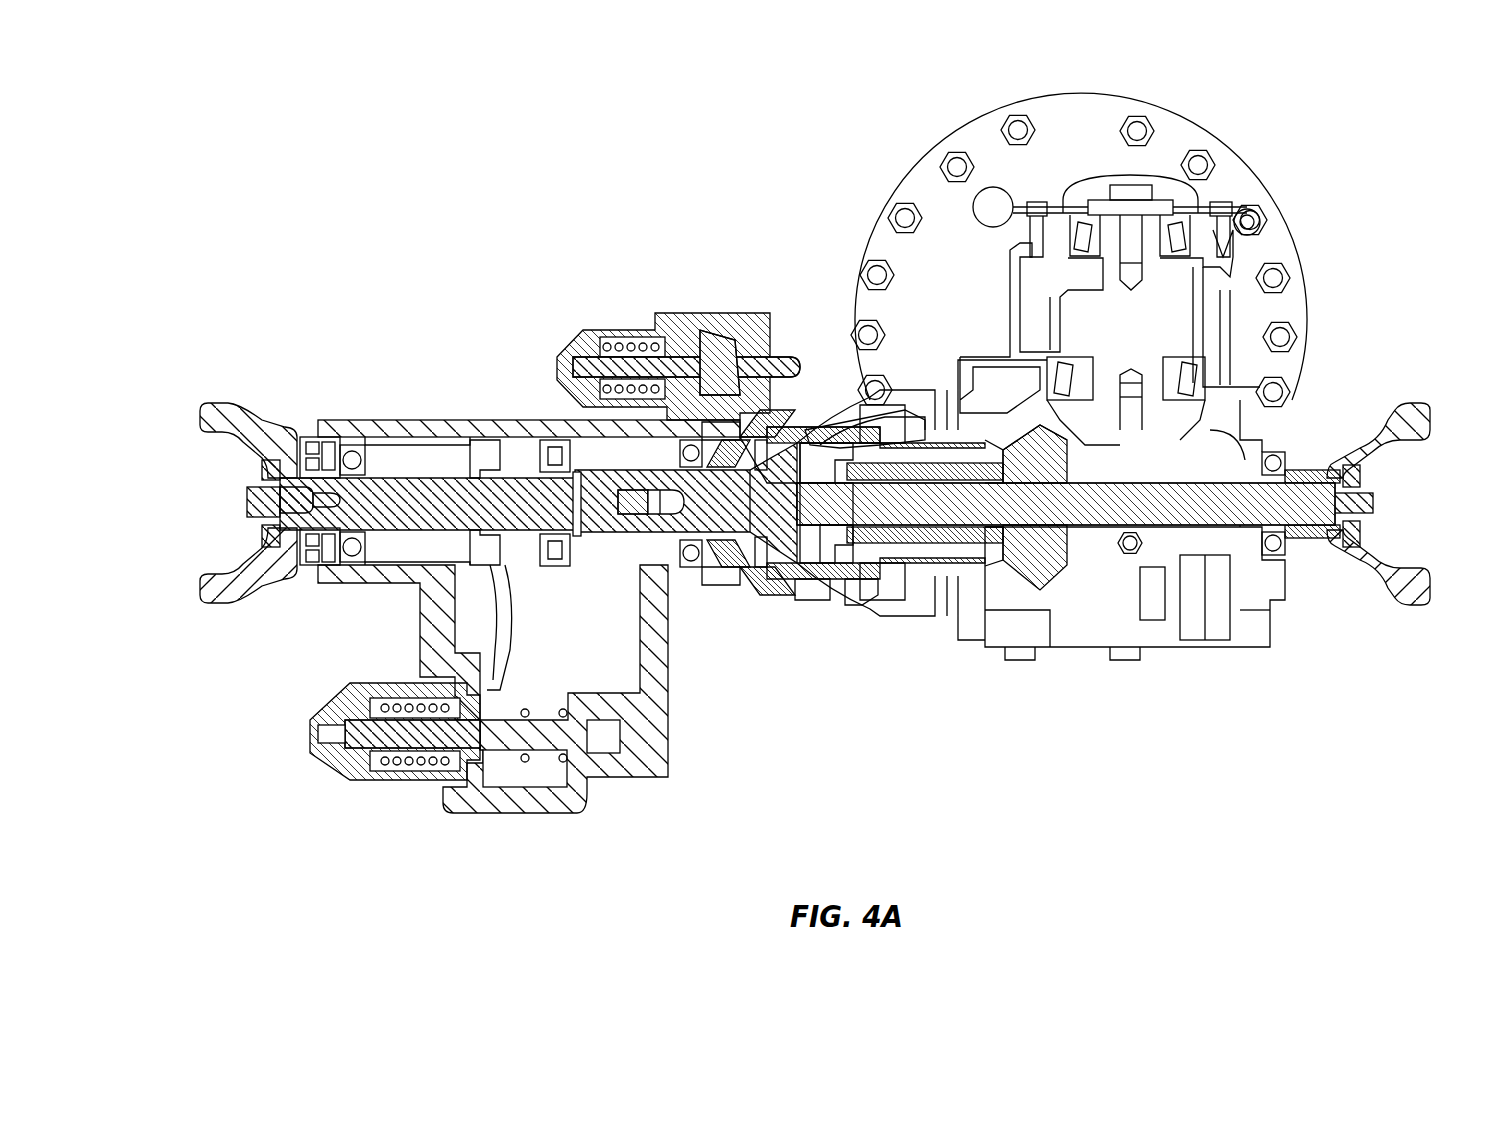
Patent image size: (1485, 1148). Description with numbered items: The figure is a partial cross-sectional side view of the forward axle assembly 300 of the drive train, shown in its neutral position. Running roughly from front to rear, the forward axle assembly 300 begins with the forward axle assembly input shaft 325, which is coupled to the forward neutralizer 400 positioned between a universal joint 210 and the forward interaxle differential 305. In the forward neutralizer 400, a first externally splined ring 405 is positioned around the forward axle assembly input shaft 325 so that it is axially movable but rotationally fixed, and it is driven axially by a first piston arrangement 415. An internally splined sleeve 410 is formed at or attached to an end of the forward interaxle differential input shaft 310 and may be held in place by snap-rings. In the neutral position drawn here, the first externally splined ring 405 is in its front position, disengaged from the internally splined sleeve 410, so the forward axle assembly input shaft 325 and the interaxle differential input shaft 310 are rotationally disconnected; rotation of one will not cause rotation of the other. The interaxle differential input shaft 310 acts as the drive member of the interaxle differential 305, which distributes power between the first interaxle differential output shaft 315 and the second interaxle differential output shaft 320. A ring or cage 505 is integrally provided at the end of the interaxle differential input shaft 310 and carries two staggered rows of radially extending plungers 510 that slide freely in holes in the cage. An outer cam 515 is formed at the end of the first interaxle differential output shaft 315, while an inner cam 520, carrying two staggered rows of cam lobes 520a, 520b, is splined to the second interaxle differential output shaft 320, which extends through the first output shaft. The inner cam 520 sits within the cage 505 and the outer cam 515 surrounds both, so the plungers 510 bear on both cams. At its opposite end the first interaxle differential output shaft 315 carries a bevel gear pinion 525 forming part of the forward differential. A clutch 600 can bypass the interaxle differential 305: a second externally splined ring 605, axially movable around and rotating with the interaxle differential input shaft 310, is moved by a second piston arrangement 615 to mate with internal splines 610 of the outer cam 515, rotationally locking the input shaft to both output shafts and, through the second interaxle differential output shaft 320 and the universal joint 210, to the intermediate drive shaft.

The universal joint 210 is at (202, 405).
The forward axle assembly 300 is at (493, 128).
The forward interaxle differential 305 is at (835, 415).
The forward interaxle differential input shaft 310 is at (712, 565).
The first interaxle differential output shaft 315 is at (1023, 560).
The second interaxle differential output shaft 320 is at (1195, 510).
The forward axle assembly input shaft 325 is at (385, 532).
The forward neutralizer 400 is at (295, 823).
The first externally splined ring 405 is at (495, 440).
The internally splined sleeve 410 is at (555, 532).
The first piston arrangement 415 is at (440, 785).
The ring or cage 505 is at (842, 562).
The plungers 510 is at (760, 562).
The outer cam 515 is at (927, 457).
The inner cam 520 is at (888, 562).
The cam lobes 520a is at (807, 585).
The cam lobes 520b is at (878, 570).
The bevel gear pinion 525 is at (1030, 565).
The clutch 600 is at (638, 245).
The second externally splined ring 605 is at (737, 447).
The internal splines 610 is at (776, 440).
The second piston arrangement 615 is at (640, 325).